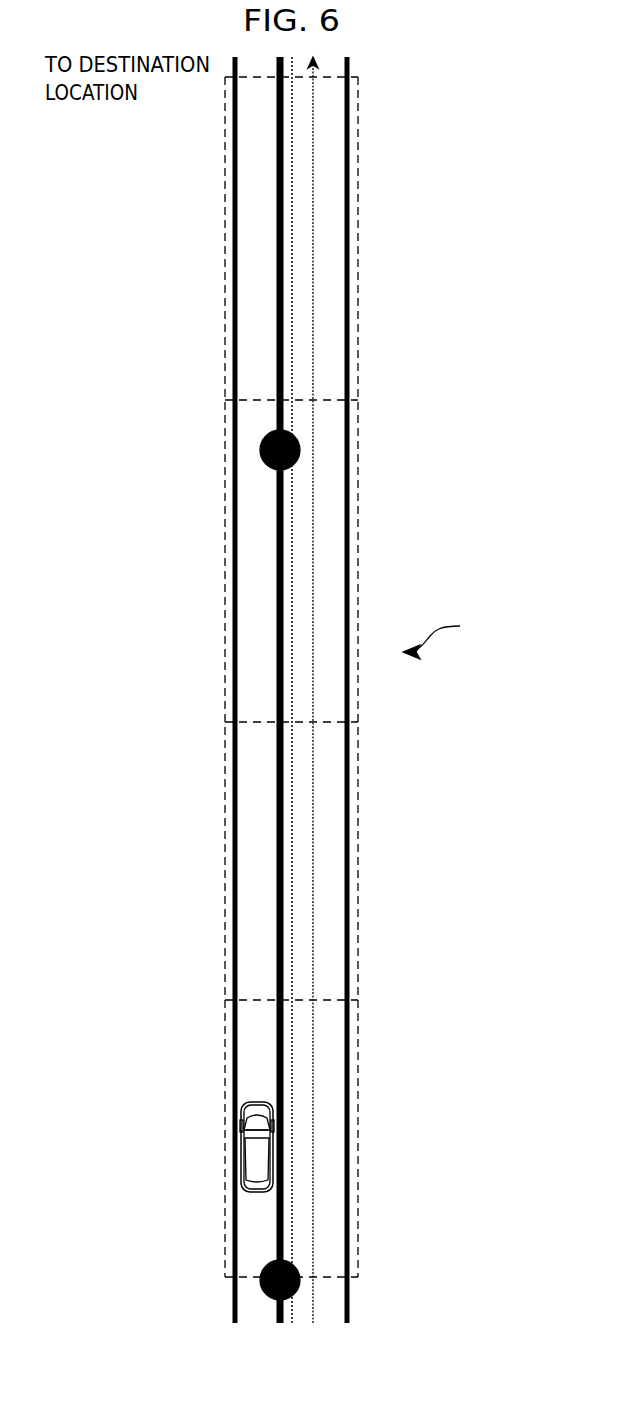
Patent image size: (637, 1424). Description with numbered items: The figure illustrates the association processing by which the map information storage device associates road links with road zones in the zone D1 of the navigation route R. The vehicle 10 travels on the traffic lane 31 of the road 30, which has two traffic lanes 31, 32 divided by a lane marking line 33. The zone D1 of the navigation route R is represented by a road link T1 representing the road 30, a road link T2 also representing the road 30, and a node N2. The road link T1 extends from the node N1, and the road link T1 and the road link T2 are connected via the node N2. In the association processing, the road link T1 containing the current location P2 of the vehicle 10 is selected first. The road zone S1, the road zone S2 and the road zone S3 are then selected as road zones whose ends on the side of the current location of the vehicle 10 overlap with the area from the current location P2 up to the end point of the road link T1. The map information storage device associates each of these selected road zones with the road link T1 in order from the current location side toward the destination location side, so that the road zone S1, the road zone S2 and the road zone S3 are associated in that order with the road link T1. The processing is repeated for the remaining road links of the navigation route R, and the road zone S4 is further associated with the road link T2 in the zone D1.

The road 30 is at (351, 118).
The traffic lane 31 is at (273, 151).
The traffic lane 32 is at (333, 151).
The lane marking line 33 is at (292, 322).
The navigation route R is at (313, 795).
The zone D1 is at (445, 637).
The road link T2 is at (280, 218).
The road zone S4 is at (224, 320).
The node N2 is at (262, 448).
The road zone S3 is at (224, 610).
The road zone S2 is at (224, 860).
The road link T1 is at (280, 965).
The road zone S1 is at (224, 1095).
The current location P2 is at (225, 1146).
The vehicle 10 is at (253, 1158).
The node N1 is at (265, 1270).